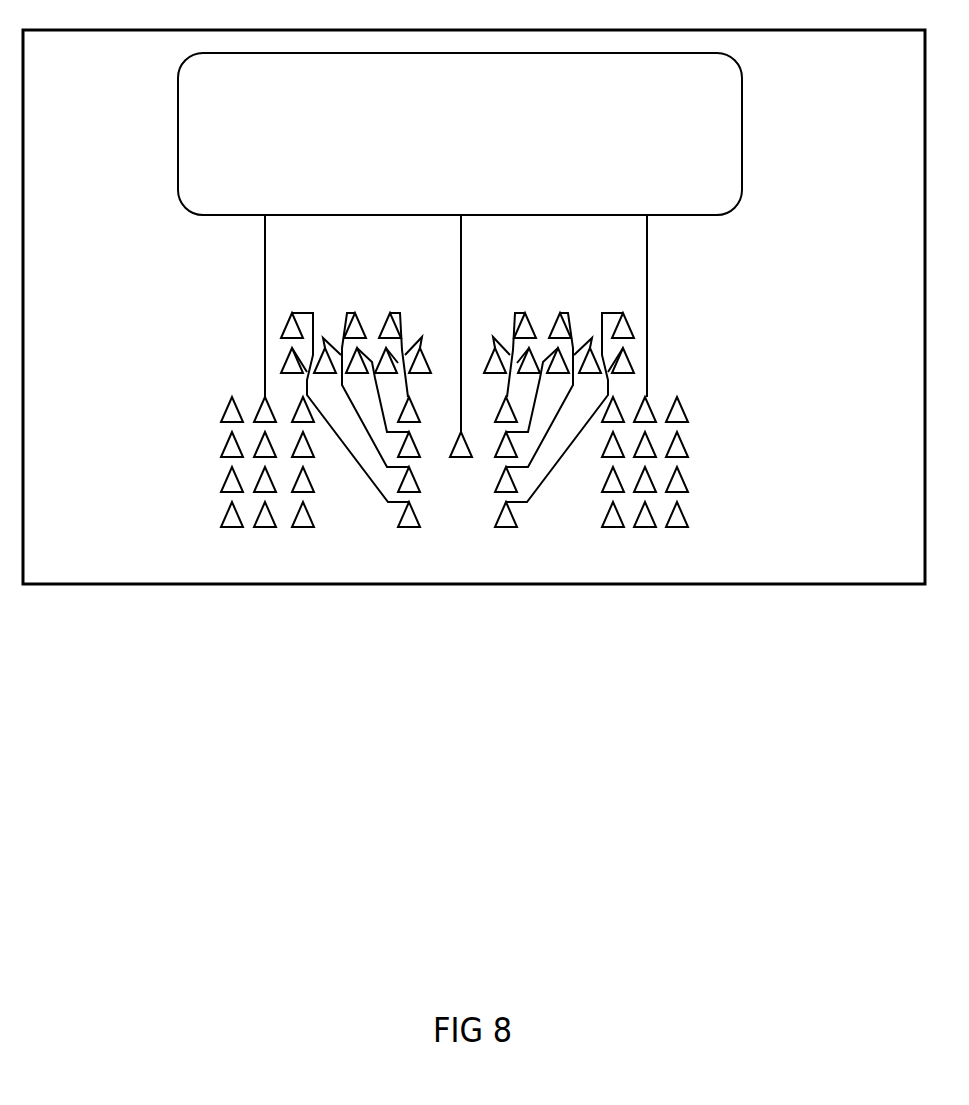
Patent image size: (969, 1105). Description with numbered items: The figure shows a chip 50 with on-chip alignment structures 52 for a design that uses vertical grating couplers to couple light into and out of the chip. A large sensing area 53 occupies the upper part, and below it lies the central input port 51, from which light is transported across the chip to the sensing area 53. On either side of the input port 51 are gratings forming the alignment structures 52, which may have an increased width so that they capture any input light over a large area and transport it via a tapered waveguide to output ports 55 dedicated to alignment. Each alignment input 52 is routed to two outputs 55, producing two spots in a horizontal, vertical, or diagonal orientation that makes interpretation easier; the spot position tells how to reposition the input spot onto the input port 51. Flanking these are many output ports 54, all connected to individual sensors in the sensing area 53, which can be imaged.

The antenna system 50 is at (908, 65).
The input port 51 is at (476, 483).
The on-chip alignment structures 52 is at (421, 557).
The sensing area 53 is at (473, 149).
The output ports 54 is at (200, 424).
The alignment output ports 55 is at (367, 297).